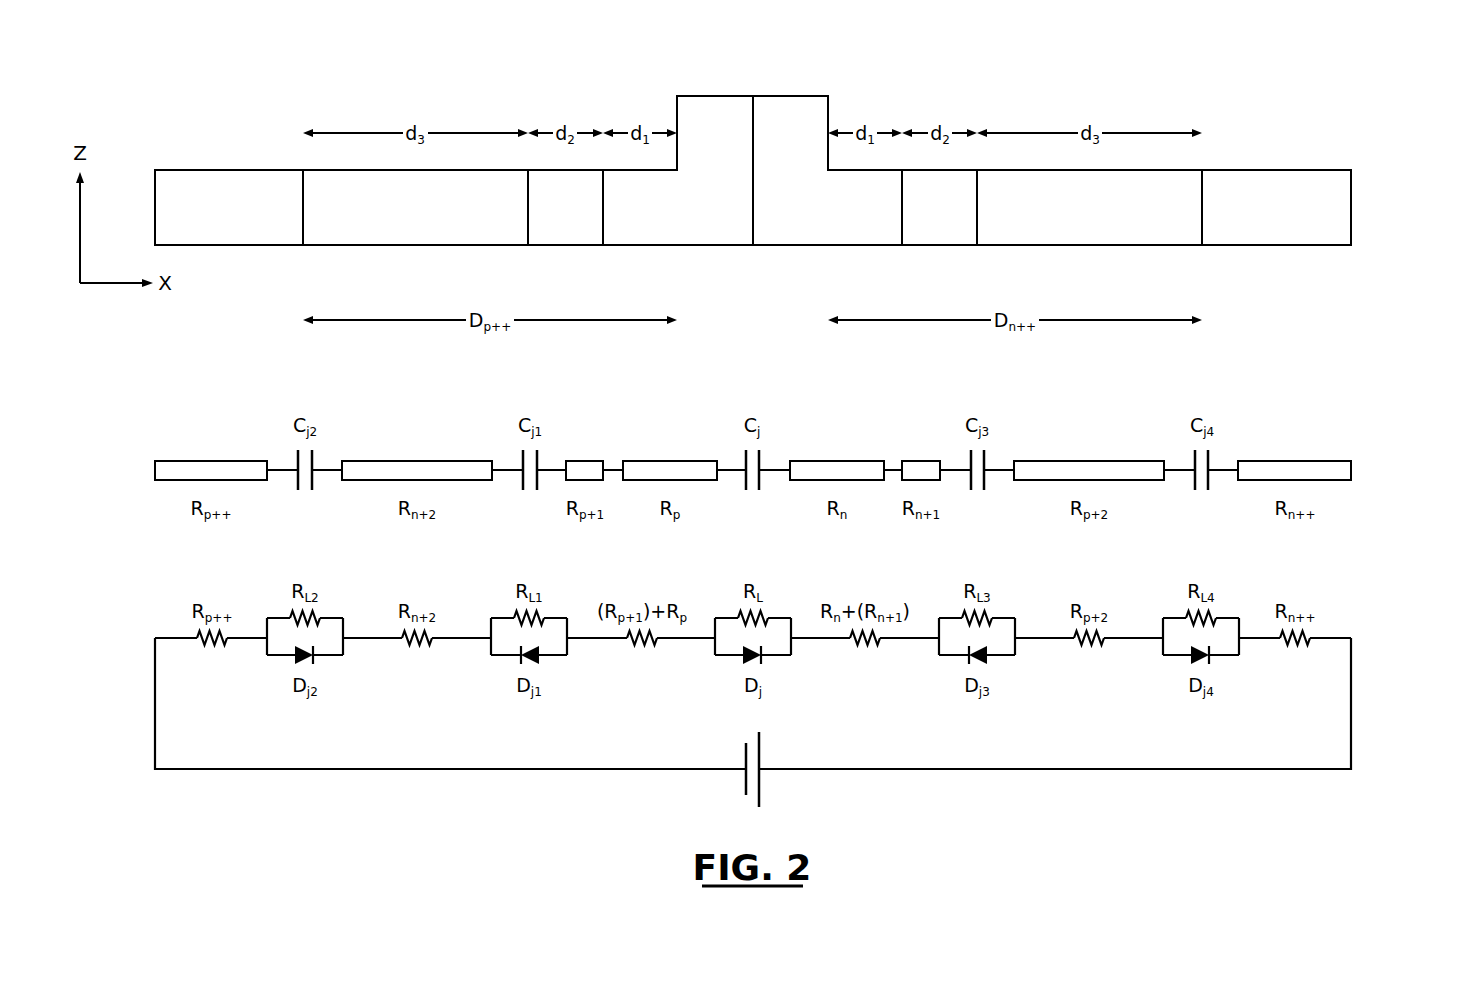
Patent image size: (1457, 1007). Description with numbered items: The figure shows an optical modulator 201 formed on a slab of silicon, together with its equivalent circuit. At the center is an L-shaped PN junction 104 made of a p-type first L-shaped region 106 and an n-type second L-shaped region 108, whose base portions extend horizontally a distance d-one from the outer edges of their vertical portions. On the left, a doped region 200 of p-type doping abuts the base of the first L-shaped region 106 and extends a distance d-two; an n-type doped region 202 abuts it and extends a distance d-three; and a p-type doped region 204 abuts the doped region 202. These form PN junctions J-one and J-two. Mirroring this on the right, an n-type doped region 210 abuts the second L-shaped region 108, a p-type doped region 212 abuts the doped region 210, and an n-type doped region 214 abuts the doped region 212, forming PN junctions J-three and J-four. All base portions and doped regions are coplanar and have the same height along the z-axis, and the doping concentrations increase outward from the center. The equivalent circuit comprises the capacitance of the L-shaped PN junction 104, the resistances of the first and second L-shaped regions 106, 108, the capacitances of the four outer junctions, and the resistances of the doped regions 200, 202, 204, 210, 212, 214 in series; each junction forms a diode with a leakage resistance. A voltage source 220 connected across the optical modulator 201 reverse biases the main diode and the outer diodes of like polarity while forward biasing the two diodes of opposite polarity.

The L-shaped PN junction 104 is at (758, 74).
The first L-shaped region 106 is at (677, 116).
The second L-shaped region 108 is at (830, 115).
The doped region 200 is at (579, 246).
The optical modulator 201 is at (1020, 56).
The doped region 202 is at (455, 246).
The doped region 204 is at (230, 170).
The doped region 210 is at (925, 246).
The doped region 212 is at (1052, 246).
The doped region 214 is at (1278, 170).
The voltage source 220 is at (744, 785).